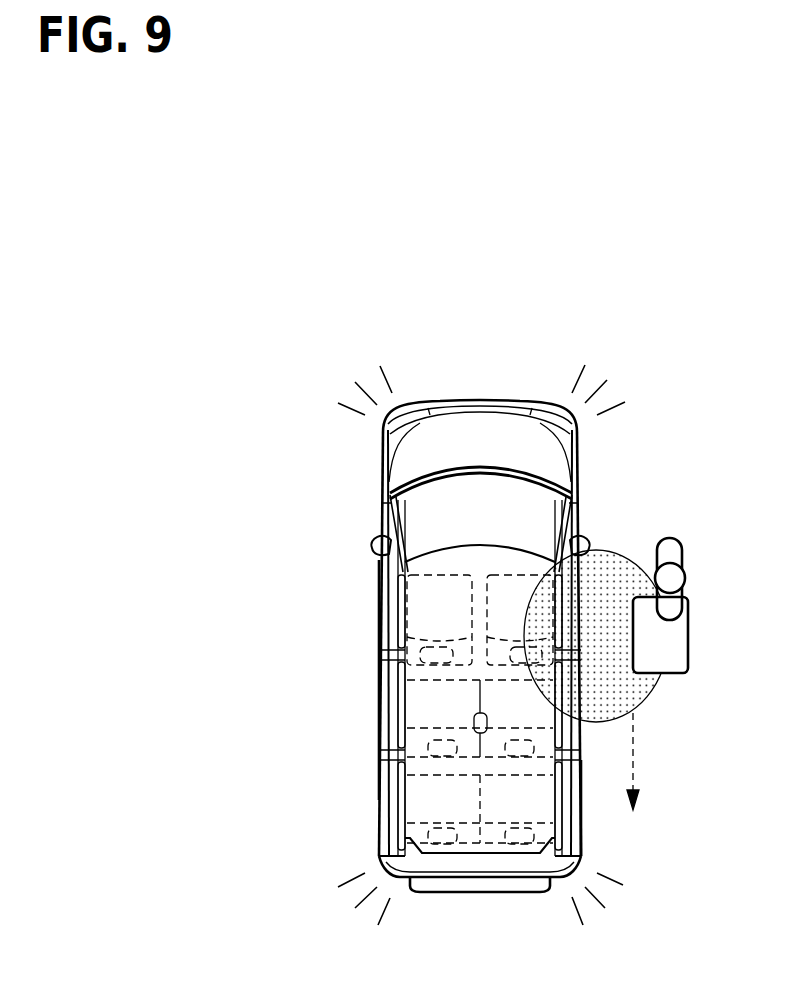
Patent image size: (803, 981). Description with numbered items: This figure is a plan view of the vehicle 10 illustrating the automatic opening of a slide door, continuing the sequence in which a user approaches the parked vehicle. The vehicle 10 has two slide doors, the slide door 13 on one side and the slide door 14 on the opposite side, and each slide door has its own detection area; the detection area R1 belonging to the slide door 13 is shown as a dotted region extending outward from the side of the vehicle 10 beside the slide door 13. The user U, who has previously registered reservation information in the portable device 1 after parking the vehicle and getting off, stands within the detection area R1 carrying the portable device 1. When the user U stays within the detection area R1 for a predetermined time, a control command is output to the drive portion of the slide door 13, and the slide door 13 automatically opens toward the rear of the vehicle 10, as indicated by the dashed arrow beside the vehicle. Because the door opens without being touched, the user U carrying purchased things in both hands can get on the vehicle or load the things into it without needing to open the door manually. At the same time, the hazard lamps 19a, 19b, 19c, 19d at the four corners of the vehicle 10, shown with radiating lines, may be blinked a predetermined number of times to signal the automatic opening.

The vehicle 10 is at (480, 401).
The hazard lamp 19a is at (578, 424).
The hazard lamp 19b is at (383, 426).
The hazard lamp 19c is at (580, 858).
The hazard lamp 19d is at (382, 862).
The slide door 14 is at (380, 717).
The slide door 13 is at (582, 800).
The detection area R1 is at (617, 553).
The user U is at (683, 558).
The portable device 1 is at (689, 640).